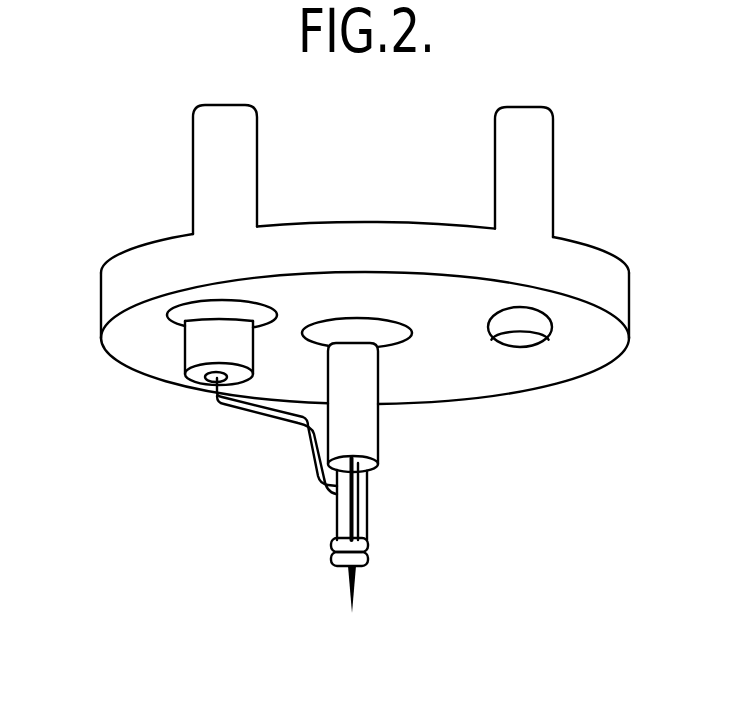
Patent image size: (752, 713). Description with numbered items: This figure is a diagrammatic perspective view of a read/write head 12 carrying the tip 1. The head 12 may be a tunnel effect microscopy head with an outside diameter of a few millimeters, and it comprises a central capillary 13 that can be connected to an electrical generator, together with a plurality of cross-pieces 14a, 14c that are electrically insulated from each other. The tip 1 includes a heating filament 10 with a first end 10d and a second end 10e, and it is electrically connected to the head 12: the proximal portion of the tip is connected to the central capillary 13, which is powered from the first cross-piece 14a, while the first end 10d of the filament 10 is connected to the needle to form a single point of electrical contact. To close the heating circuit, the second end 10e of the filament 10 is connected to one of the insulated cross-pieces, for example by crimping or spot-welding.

The tip 1 is at (367, 535).
The filament 10 is at (370, 523).
The first end of the filament 10d is at (381, 487).
The second end of the filament 10e is at (293, 425).
The head 12 is at (104, 258).
The central capillary 13 is at (356, 434).
The first cross-piece 14a is at (213, 186).
The cross-piece 14c is at (529, 178).